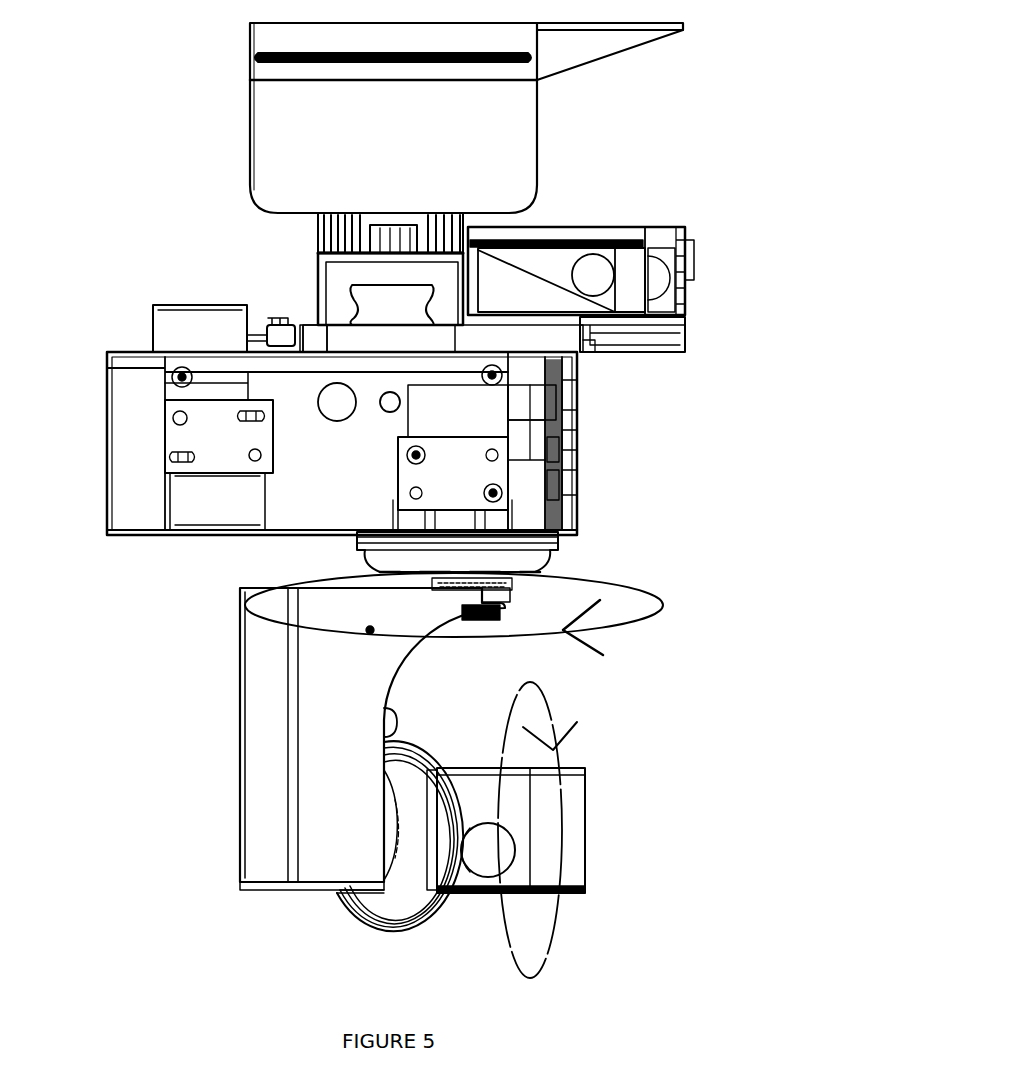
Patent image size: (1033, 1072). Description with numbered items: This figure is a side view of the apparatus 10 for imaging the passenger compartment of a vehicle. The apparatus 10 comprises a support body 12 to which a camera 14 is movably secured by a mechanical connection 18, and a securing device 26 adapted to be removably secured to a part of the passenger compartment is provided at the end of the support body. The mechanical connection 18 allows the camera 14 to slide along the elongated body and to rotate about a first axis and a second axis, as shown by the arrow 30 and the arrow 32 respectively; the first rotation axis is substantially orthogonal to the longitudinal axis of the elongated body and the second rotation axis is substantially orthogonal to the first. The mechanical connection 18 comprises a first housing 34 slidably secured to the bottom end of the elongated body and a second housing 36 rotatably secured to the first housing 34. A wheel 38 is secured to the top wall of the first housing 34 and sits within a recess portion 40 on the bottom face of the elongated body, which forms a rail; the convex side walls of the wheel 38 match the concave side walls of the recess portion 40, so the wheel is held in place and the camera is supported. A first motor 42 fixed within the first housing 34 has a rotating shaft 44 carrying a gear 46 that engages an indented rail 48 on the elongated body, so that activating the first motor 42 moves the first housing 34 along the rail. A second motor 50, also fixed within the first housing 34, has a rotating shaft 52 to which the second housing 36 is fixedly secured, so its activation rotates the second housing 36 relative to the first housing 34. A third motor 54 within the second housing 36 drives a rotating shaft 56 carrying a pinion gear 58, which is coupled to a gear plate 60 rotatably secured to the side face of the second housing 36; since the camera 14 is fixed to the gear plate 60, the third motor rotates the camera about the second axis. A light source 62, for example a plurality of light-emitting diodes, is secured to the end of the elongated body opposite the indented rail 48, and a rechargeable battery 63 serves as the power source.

The apparatus 10 is at (66, 82).
The support body 12 is at (709, 408).
The camera 14 is at (592, 868).
The mechanical connection 18 is at (143, 619).
The securing device 26 is at (515, 130).
The arrow 30 is at (620, 585).
The arrow 32 is at (570, 723).
The first housing 34 is at (125, 498).
The second housing 36 is at (270, 757).
The wheel 38 is at (395, 300).
The recess portion 40 is at (377, 273).
The first motor 42 is at (220, 437).
The rotating shaft 44 is at (237, 380).
The gear 46 is at (263, 328).
The indented rail 48 is at (273, 333).
The second motor 50 is at (487, 465).
The rotating shaft 52 is at (470, 520).
The third motor 54 is at (318, 845).
The rotating shaft 56 is at (408, 832).
The pinion gear 58 is at (405, 722).
The gear plate 60 is at (397, 908).
The light source 62 is at (667, 333).
The rechargeable battery 63 is at (608, 242).